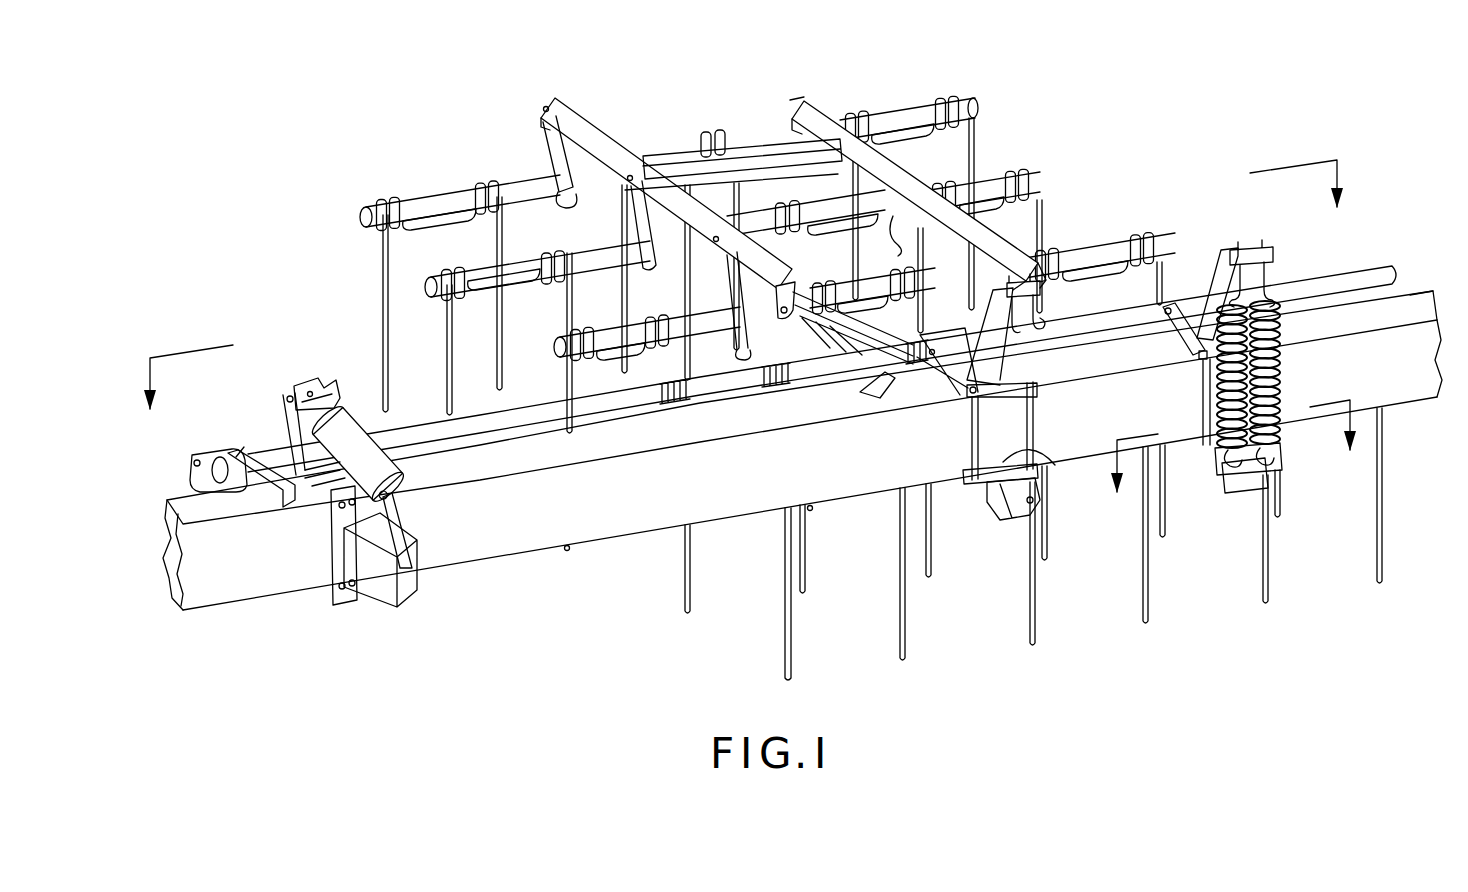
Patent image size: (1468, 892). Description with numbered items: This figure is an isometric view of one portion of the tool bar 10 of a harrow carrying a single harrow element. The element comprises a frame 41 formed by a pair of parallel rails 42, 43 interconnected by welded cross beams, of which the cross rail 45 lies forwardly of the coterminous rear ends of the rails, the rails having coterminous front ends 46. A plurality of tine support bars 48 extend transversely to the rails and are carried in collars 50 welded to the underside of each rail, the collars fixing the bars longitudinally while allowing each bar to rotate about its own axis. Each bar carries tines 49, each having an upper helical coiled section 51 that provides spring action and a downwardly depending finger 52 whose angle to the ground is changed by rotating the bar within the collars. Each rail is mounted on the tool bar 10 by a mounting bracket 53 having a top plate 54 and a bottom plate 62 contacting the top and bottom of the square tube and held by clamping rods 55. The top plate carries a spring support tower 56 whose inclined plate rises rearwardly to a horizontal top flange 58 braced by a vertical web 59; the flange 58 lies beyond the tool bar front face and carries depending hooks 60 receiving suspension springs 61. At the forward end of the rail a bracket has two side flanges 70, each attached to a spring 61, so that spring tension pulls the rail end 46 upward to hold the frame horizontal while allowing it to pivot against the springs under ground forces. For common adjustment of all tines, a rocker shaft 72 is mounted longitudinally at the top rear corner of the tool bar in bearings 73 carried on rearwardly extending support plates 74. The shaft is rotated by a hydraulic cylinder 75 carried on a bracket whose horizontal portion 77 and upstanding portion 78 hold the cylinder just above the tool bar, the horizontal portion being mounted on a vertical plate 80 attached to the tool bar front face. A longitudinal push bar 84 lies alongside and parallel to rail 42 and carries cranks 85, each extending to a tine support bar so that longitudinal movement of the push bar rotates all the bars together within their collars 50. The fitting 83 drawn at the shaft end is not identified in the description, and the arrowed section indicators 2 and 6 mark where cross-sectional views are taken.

The tool bar 10 is at (630, 526).
The frame 41 is at (793, 197).
The rail 42 is at (611, 200).
The rail 43 is at (810, 97).
The cross rail 45 is at (758, 160).
The front ends 46 is at (998, 521).
The tine support bars 48 is at (739, 228).
The tines 49 is at (376, 196).
The collars 50 is at (562, 202).
The upper helical coiled section 51 is at (378, 190).
The finger 52 is at (382, 272).
The mounting bracket 53 is at (962, 400).
The top plate 54 is at (1166, 302).
The clamping rods 55 is at (968, 441).
The spring support tower 56 is at (963, 380).
The horizontal top flange 58 is at (1030, 270).
The vertical web 59 is at (1020, 370).
The depending hooks 60 is at (1274, 259).
The suspension springs 61 is at (1285, 393).
The bottom plate 62 is at (1054, 464).
The side flanges 70 is at (1272, 478).
The rocker shaft 72 is at (1370, 268).
The bearings 73 is at (236, 458).
The support plates 74 is at (264, 498).
The hydraulic cylinder 75 is at (366, 396).
The horizontal portion 77 is at (412, 596).
The upstanding portion 78 is at (411, 542).
The vertical plate 80 is at (331, 590).
The rod end 83 is at (284, 426).
The longitudinal push bar 84 is at (590, 130).
The cranks 85 is at (546, 118).
The section line 2 is at (745, 304).
The section line 6 is at (1236, 466).